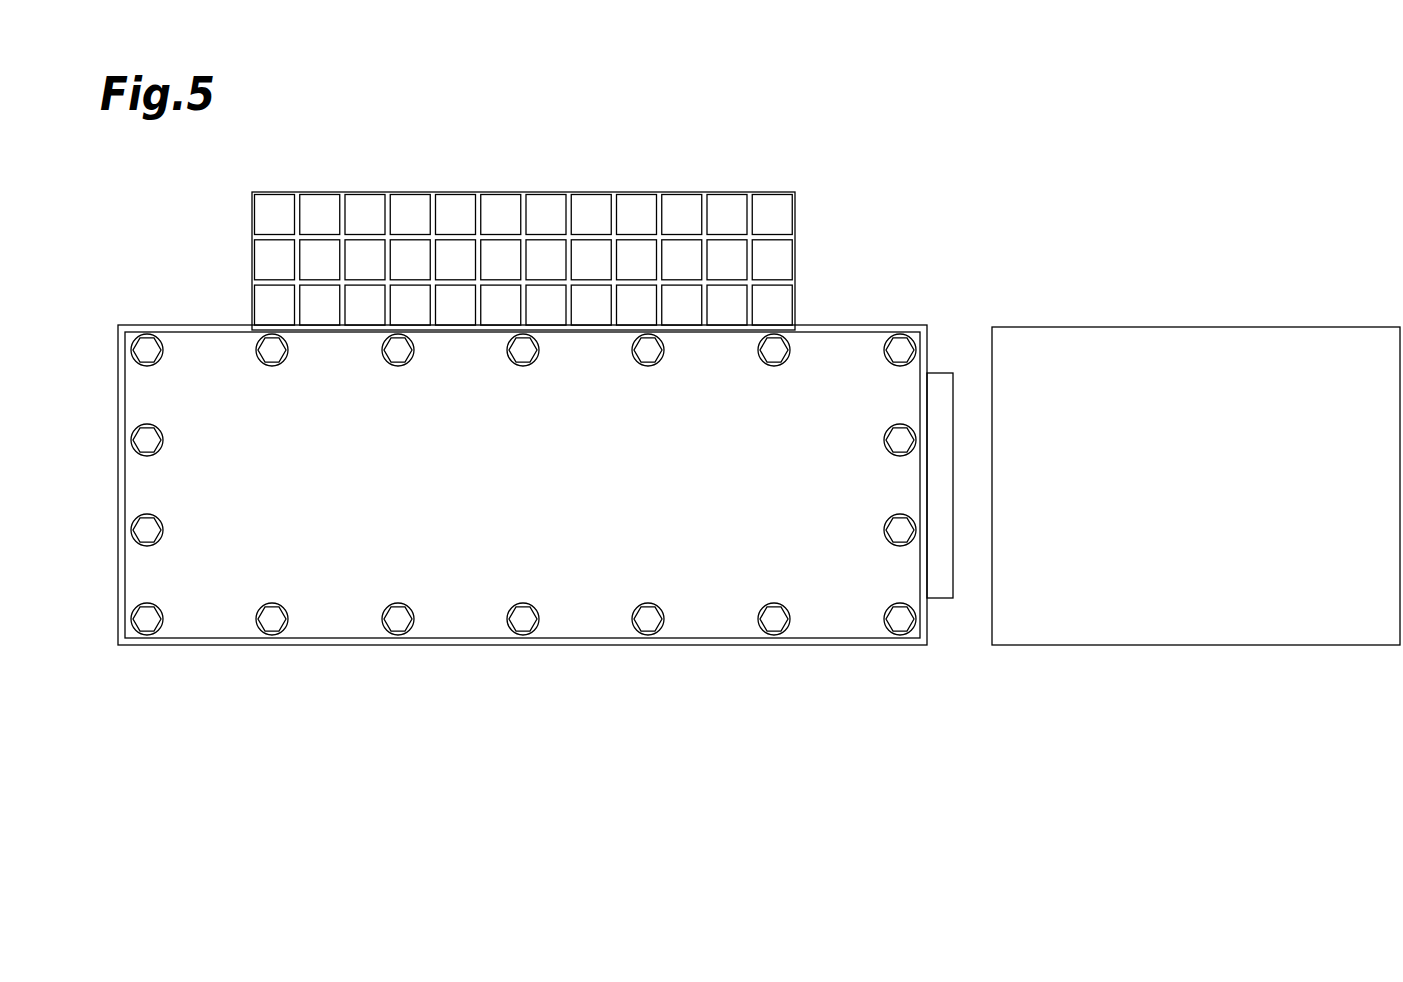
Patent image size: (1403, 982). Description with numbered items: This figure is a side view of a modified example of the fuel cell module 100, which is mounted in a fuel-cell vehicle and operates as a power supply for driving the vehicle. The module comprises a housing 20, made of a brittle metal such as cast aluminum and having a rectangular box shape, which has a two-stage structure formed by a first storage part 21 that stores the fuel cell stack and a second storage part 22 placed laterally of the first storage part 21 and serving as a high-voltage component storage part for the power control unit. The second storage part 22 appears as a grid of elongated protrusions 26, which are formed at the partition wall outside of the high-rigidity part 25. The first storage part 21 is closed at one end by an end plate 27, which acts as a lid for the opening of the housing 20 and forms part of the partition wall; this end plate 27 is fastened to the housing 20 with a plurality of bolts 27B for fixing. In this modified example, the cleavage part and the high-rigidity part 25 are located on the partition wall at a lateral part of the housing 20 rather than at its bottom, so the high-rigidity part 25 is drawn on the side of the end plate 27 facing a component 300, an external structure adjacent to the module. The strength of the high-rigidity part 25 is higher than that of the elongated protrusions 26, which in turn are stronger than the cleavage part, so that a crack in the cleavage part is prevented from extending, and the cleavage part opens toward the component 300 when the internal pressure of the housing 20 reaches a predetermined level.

The fuel cell module 100 is at (845, 160).
The housing 20 is at (693, 108).
The first storage part 21 is at (867, 325).
The second storage part 22 is at (677, 190).
The high-rigidity part 25 is at (935, 372).
The elongated protrusions 26 is at (452, 240).
The end plate 27 is at (448, 572).
The bolts 27B is at (648, 622).
The component 300 is at (1250, 318).